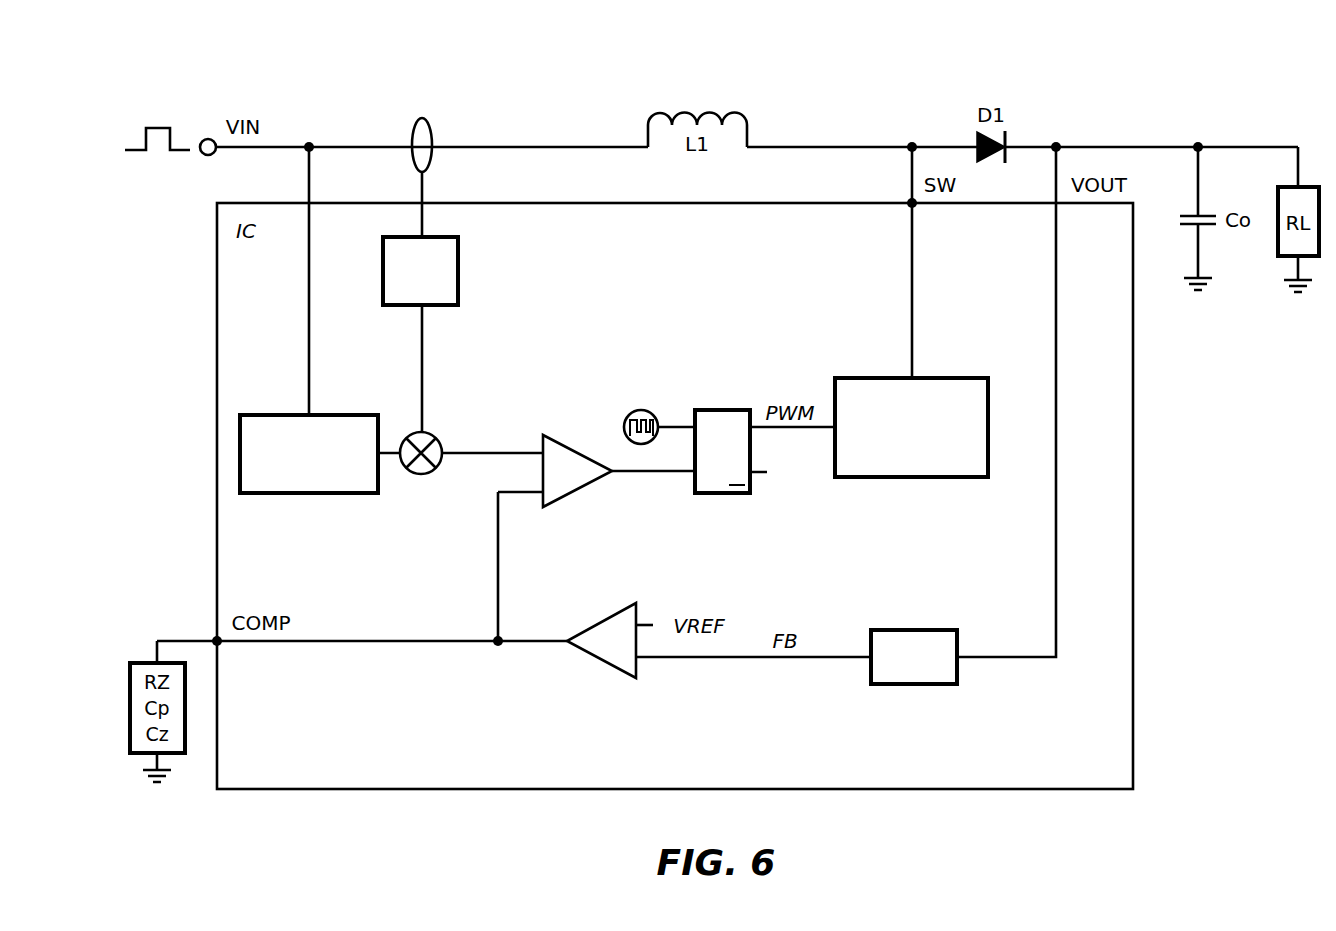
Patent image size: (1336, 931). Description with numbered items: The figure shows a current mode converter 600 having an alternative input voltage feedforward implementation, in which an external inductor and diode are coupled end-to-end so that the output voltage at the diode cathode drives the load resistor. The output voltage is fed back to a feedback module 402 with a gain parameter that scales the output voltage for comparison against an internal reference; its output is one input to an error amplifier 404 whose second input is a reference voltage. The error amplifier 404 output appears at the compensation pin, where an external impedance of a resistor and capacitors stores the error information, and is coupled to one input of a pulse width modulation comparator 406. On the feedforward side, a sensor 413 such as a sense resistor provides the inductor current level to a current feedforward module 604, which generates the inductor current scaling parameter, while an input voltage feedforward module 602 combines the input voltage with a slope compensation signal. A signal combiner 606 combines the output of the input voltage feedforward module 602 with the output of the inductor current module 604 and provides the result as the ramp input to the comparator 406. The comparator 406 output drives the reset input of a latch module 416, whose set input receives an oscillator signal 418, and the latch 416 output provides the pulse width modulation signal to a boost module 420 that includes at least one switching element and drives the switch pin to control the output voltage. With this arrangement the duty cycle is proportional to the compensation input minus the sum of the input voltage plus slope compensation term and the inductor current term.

The current mode converter 600 is at (534, 84).
The sensor 413 is at (430, 124).
The current feedforward module 604 is at (458, 268).
The VIN feedforward module 602 is at (333, 415).
The signal combiner 606 is at (437, 437).
The PWM comparator 406 is at (578, 452).
The oscillator signal 418 is at (621, 423).
The latch module 416 is at (718, 410).
The boost module 420 is at (950, 378).
The error amplifier 404 is at (598, 623).
The feedback module 402 is at (912, 630).